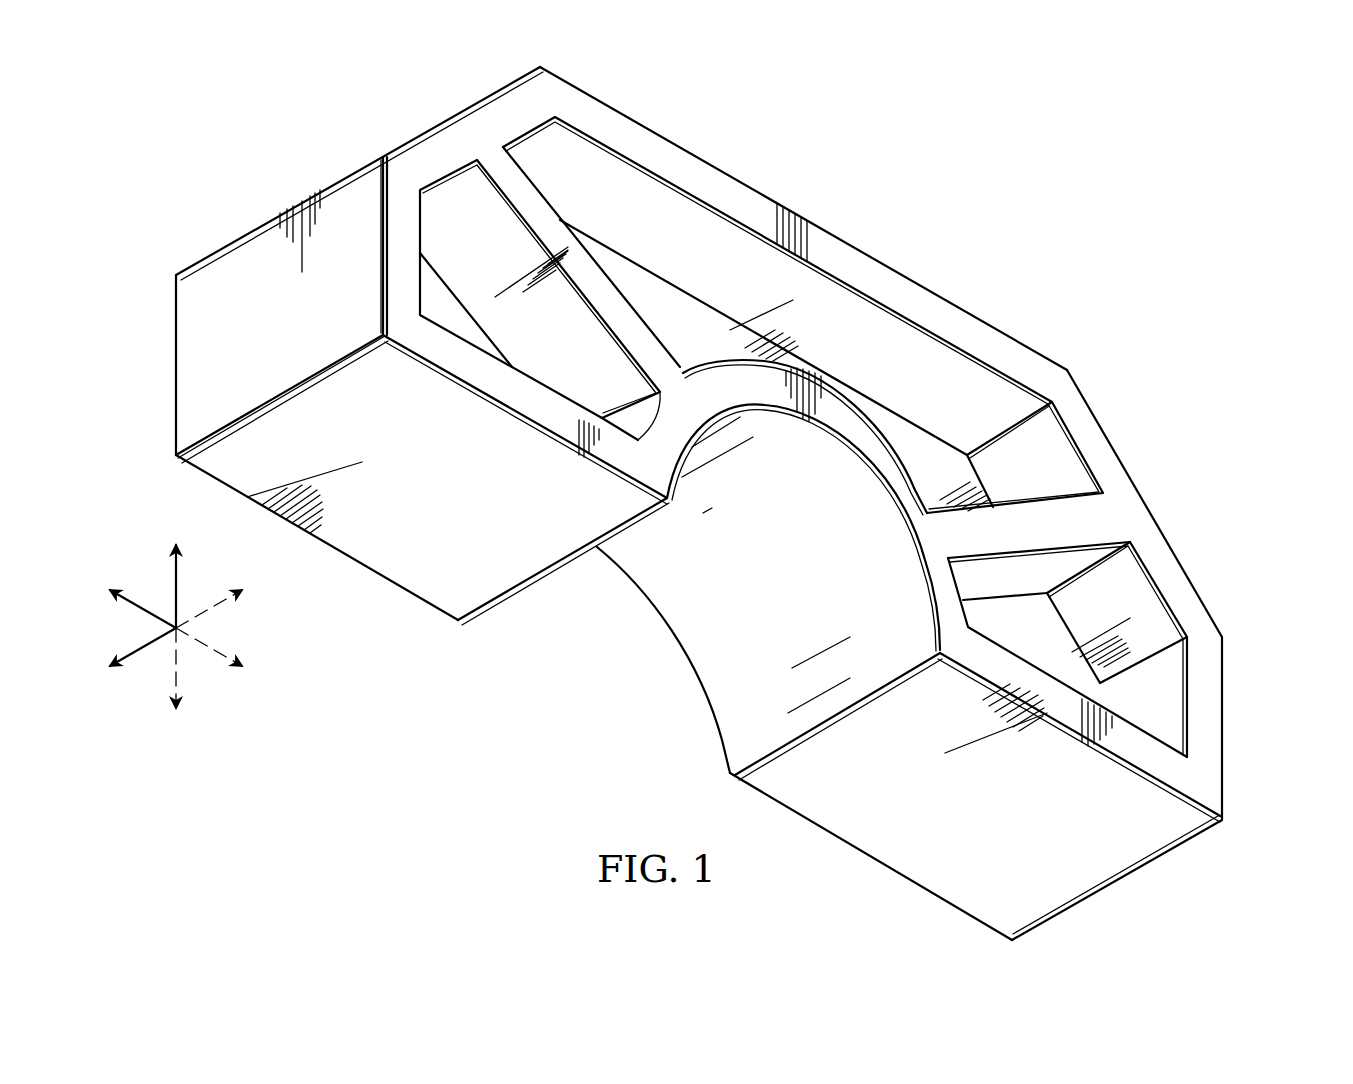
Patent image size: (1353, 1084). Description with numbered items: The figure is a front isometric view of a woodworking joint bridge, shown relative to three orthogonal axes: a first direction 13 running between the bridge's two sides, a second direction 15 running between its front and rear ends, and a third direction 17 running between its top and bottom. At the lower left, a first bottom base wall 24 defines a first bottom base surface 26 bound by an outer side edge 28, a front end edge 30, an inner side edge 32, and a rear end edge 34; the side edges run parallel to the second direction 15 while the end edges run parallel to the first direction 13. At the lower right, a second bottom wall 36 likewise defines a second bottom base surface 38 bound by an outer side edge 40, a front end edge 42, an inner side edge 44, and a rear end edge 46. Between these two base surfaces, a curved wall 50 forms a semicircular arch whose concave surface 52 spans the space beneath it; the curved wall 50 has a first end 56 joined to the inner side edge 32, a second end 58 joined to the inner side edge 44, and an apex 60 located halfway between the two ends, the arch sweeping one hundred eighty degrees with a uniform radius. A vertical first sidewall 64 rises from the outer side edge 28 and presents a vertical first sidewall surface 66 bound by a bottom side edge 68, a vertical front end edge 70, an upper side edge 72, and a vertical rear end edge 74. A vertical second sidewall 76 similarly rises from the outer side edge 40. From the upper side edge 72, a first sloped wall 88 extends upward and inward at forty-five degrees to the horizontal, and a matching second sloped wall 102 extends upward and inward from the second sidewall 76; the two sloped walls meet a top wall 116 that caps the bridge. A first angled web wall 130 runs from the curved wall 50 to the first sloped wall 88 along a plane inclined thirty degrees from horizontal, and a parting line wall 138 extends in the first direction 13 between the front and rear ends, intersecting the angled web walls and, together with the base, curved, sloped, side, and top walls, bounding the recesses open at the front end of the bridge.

The first direction 13 is at (132, 604).
The second direction 15 is at (132, 666).
The third direction 17 is at (178, 584).
The first bottom base wall 24 is at (422, 578).
The first bottom base surface 26 is at (457, 490).
The outer side edge 28 is at (282, 398).
The front end edge 30 is at (530, 423).
The inner side edge 32 is at (547, 566).
The rear end edge 34 is at (350, 558).
The second bottom wall 36 is at (1113, 861).
The second bottom base surface 38 is at (997, 817).
The outer side edge 40 is at (1073, 898).
The front end edge 42 is at (1133, 772).
The inner side edge 44 is at (844, 720).
The rear end edge 46 is at (862, 852).
The curved wall 50 is at (702, 627).
The concave surface 52 is at (802, 592).
The first end 56 is at (505, 597).
The second end 58 is at (788, 728).
The apex 60 is at (800, 433).
The vertical first sidewall 64 is at (232, 272).
The vertical first sidewall surface 66 is at (295, 317).
The bottom side edge 68 is at (243, 414).
The vertical front end edge 70 is at (380, 305).
The upper side edge 72 is at (344, 182).
The vertical rear end edge 74 is at (175, 364).
The vertical second sidewall 76 is at (1230, 731).
The first sloped wall 88 is at (434, 122).
The second sloped wall 102 is at (1149, 501).
The top wall 116 is at (931, 289).
The first angled web wall 130 is at (604, 268).
The parting line wall 138 is at (680, 314).